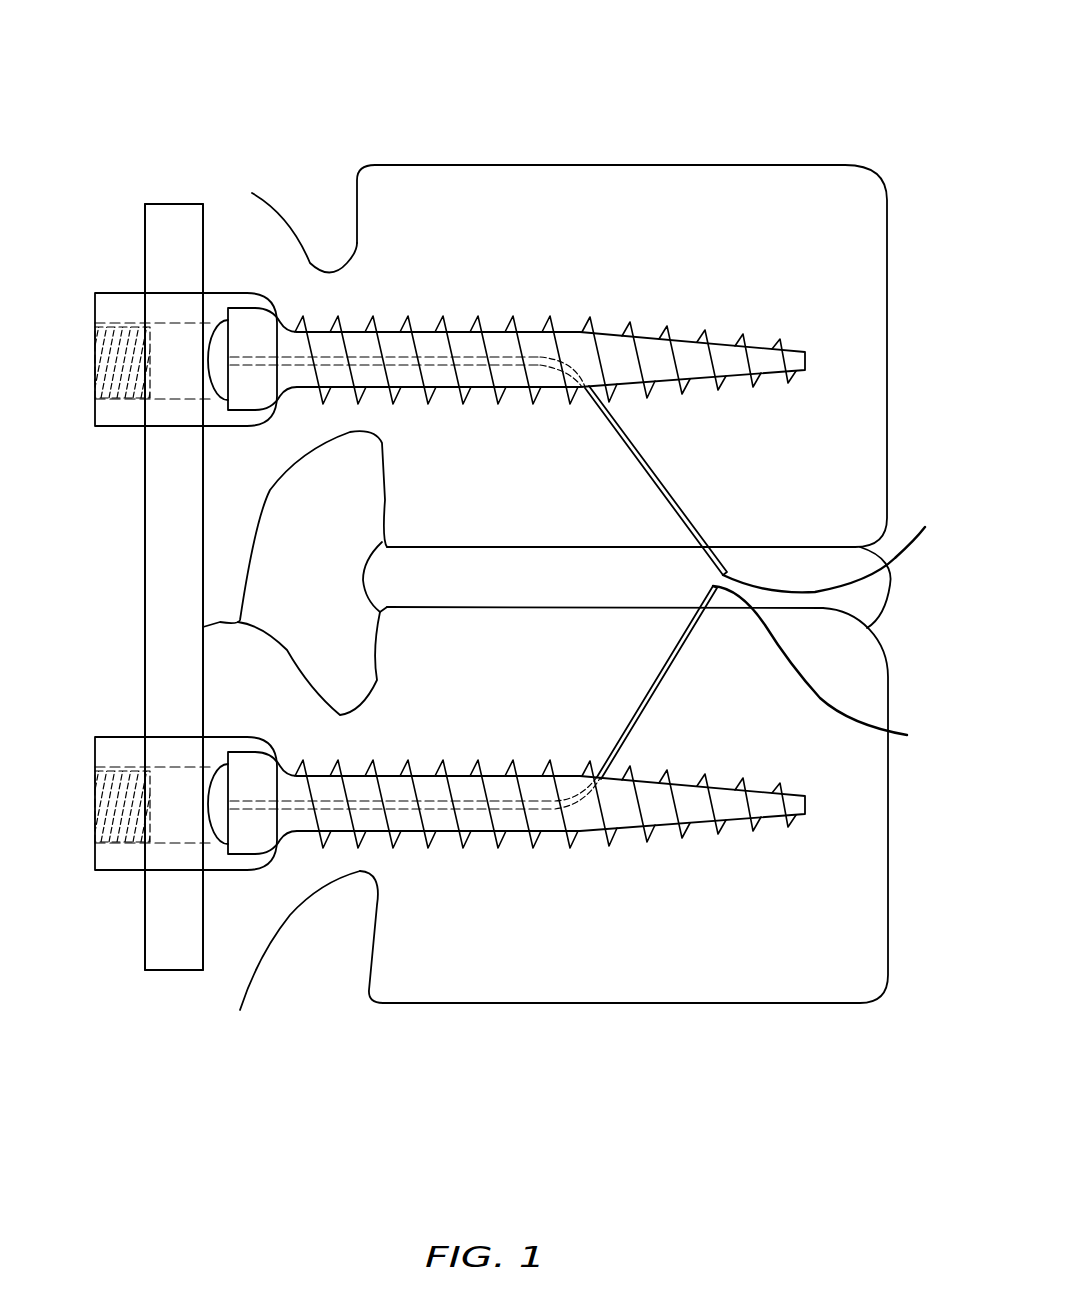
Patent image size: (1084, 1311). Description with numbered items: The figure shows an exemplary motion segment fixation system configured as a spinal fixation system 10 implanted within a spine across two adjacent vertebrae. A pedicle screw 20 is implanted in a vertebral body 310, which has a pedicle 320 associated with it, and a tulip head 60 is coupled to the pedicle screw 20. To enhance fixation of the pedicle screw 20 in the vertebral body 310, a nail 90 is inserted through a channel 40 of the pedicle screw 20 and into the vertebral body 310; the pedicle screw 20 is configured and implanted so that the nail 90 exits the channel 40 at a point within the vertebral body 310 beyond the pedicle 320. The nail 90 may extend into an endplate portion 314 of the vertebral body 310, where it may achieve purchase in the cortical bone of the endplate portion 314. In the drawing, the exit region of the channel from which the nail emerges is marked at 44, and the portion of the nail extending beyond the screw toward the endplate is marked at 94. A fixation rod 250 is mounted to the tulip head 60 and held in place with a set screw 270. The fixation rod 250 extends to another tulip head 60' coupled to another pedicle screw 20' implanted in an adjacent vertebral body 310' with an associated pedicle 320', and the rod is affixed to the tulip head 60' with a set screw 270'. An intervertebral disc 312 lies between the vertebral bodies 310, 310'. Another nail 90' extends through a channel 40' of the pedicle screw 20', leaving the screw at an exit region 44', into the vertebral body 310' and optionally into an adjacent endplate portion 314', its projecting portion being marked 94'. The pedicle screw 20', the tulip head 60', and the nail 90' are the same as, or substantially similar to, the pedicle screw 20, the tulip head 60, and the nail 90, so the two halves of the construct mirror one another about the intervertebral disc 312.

The spinal fixation system 10 is at (100, 62).
The pedicle screw 20 is at (506, 239).
The pedicle screw 20' is at (506, 919).
The channel 40 is at (385, 416).
The channel 40' is at (392, 755).
The tether exit opening 44 is at (563, 432).
The tether exit opening 44' is at (569, 755).
The tulip head 60 is at (162, 315).
The tulip head 60' is at (169, 767).
The nail 90 is at (765, 444).
The nail 90' is at (772, 698).
The tether free end 94 is at (838, 543).
The tether free end 94' is at (830, 668).
The fixation rod 250 is at (167, 535).
The set screw 270 is at (106, 402).
The set screw 270' is at (108, 864).
The vertebral body 310 is at (545, 393).
The vertebral body 310' is at (624, 840).
The intervertebral disc 312 is at (892, 583).
The endplate portion 314 is at (672, 473).
The endplate portion 314' is at (669, 645).
The pedicle 320 is at (304, 172).
The pedicle 320' is at (300, 981).